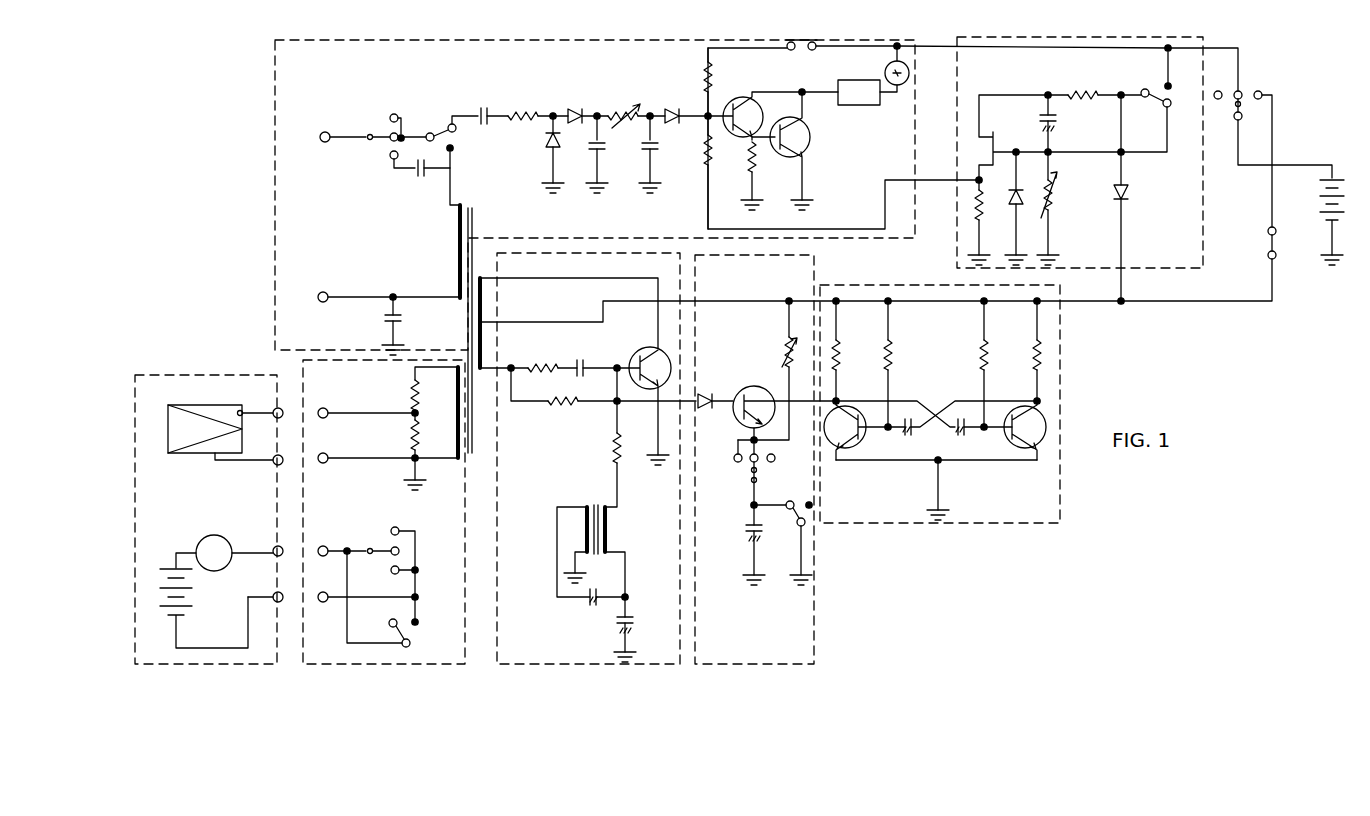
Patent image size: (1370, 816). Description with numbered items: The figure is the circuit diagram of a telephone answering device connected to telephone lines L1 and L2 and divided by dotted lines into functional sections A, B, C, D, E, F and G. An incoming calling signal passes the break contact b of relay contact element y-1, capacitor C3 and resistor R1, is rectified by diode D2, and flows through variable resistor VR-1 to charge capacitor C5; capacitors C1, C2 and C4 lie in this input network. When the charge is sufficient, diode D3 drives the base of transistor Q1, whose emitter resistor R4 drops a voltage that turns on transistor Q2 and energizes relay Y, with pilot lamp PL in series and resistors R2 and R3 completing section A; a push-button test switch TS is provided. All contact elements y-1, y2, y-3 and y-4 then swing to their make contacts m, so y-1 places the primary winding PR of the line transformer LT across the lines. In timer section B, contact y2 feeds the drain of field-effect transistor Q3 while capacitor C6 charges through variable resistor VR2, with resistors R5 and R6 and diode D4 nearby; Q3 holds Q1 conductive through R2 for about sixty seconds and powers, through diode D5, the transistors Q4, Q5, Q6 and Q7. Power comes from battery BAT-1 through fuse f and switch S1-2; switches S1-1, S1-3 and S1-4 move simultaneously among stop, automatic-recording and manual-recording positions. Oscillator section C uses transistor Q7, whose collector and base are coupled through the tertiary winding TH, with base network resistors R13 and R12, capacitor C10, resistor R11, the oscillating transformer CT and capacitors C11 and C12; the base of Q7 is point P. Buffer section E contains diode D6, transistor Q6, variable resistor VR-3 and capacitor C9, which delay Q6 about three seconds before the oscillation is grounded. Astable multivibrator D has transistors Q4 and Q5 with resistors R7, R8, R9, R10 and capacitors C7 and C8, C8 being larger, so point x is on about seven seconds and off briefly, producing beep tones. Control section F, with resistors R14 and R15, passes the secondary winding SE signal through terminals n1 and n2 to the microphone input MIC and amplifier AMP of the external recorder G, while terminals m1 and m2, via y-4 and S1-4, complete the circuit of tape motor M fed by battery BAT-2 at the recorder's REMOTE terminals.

The section A is at (716, 40).
The timer circuit section B is at (1090, 37).
The special oscillator circuit section C is at (600, 664).
The astable multivibrator circuit section D is at (964, 523).
The buffer circuit section E is at (757, 664).
The control circuit section F is at (392, 664).
The incoming message recorder G is at (230, 664).
The telephone line L1 is at (324, 140).
The telephone line L2 is at (337, 299).
The operating switch S1-1 is at (394, 114).
The operating switch S1-2 is at (1244, 90).
The operating switch S1-3 is at (766, 472).
The operating switch S1-4 is at (394, 527).
The break contact b is at (769, 367).
The make contact m is at (791, 348).
The relay contact element y-1 is at (469, 170).
The relay contact element y2 is at (1106, 102).
The relay contact element y-3 is at (783, 545).
The relay contact element y-4 is at (396, 605).
The capacitor C1 is at (418, 178).
The capacitor C2 is at (408, 320).
The capacitor C3 is at (484, 106).
The capacitor C4 is at (606, 146).
The capacitor C5 is at (659, 144).
The capacitor C6 is at (1044, 116).
The capacitor C7 is at (908, 436).
The capacitor C8 is at (958, 436).
The capacitor C9 is at (746, 524).
The capacitor C10 is at (584, 362).
The capacitor C11 is at (638, 616).
The capacitor C12 is at (598, 592).
The resistor R1 is at (524, 106).
The resistor R2 is at (704, 164).
The resistor R3 is at (704, 80).
The emitter resistor R4 is at (750, 160).
The resistor R5 is at (992, 212).
The resistor R6 is at (1082, 90).
The resistor R7 is at (842, 350).
The resistor R8 is at (894, 350).
The resistor R9 is at (974, 352).
The resistor R10 is at (1028, 352).
The resistor R11 is at (610, 447).
The resistor R12 is at (562, 396).
The resistor R13 is at (543, 362).
The resistor R14 is at (406, 396).
The resistor R15 is at (408, 438).
The variable resistor VR-1 is at (620, 106).
The variable resistor VR2 is at (1056, 192).
The variable resistor VR-3 is at (782, 348).
The diode D2 is at (574, 108).
The diode D3 is at (670, 108).
The diode D4 is at (1020, 190).
The diode D5 is at (1136, 196).
The diode D6 is at (706, 394).
The transistor Q1 is at (744, 98).
The transistor Q2 is at (790, 151).
The field effect transistor Q3 is at (989, 130).
The transistor Q4 is at (856, 416).
The transistor Q5 is at (1016, 404).
The transistor Q6 is at (784, 402).
The transistor Q7 is at (642, 347).
The relay Y is at (850, 112).
The pilot lamp PL is at (909, 74).
The test switch TS is at (812, 33).
The line transformer LT is at (484, 322).
The primary winding PR is at (426, 251).
The tertiary winding TH is at (569, 311).
The secondary winding SE is at (436, 412).
The coupling transformer CT is at (591, 539).
The point P is at (646, 386).
The point x is at (830, 390).
The fuse f is at (1204, 198).
The battery BAT-1 is at (1318, 200).
The battery BAT-2 is at (194, 598).
The terminal n1 is at (366, 402).
The terminal n2 is at (372, 461).
The terminal m1 is at (332, 538).
The terminal m2 is at (365, 608).
The amplifier AMP is at (200, 405).
The microphone MIC is at (250, 436).
The tape driving motor M is at (229, 553).
The remote control terminals REMOTE is at (277, 583).